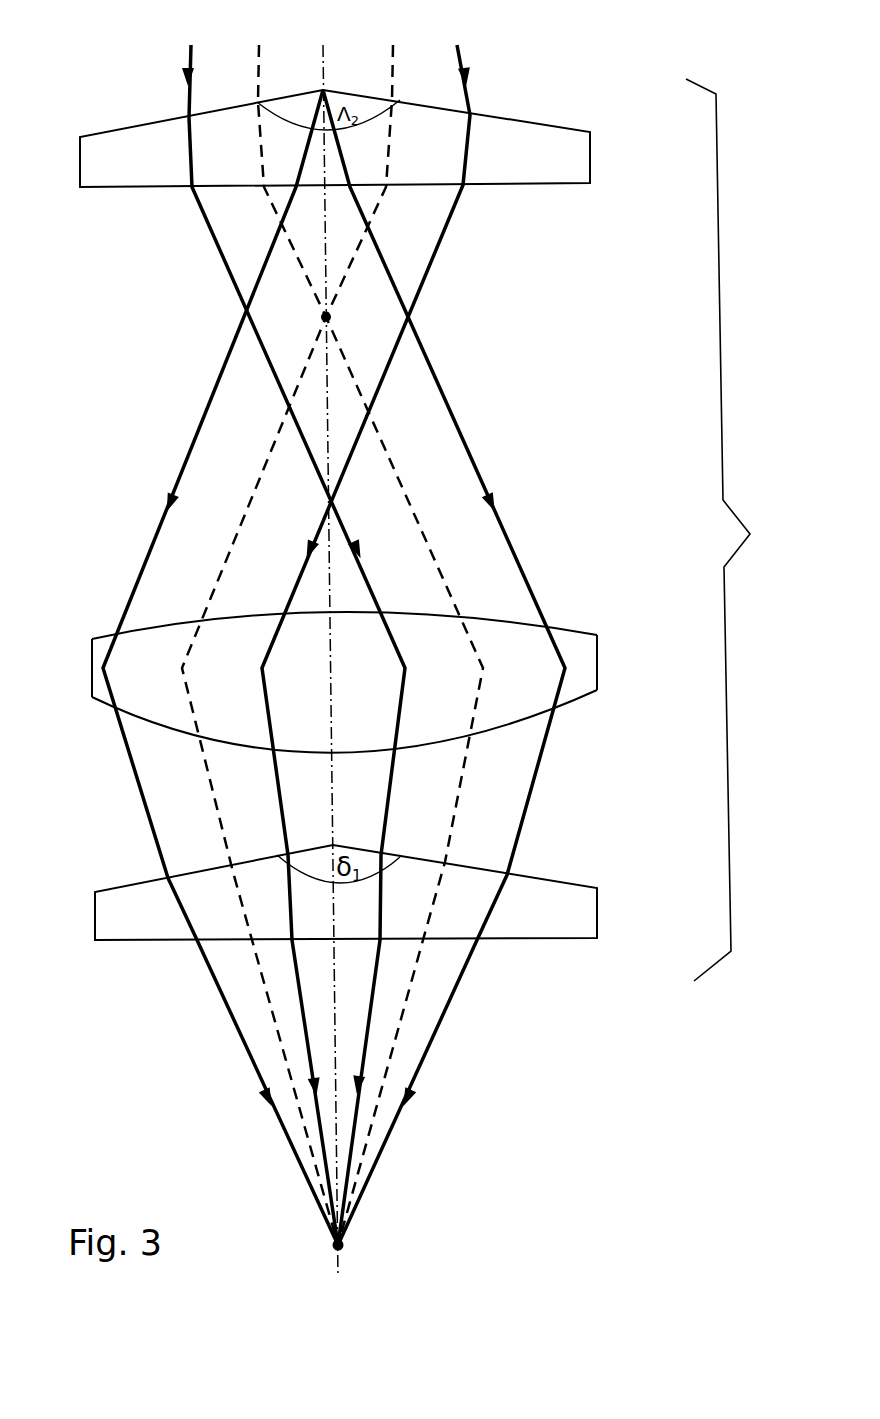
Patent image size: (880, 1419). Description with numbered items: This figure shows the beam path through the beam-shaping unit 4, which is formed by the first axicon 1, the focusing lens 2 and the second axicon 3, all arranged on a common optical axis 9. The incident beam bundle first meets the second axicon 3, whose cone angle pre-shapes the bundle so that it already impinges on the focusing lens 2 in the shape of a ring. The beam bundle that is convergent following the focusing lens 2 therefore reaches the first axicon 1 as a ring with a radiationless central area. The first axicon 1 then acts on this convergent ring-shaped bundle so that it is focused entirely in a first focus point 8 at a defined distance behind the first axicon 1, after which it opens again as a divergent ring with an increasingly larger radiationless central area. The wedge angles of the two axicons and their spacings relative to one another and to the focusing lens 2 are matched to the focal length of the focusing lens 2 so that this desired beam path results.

The first axicon 1 is at (588, 910).
The focusing lens 2 is at (588, 650).
The second axicon 3 is at (578, 157).
The beam-shaping unit 4 is at (741, 530).
The first focus point 8 is at (346, 1243).
The optical axis 9 is at (323, 64).